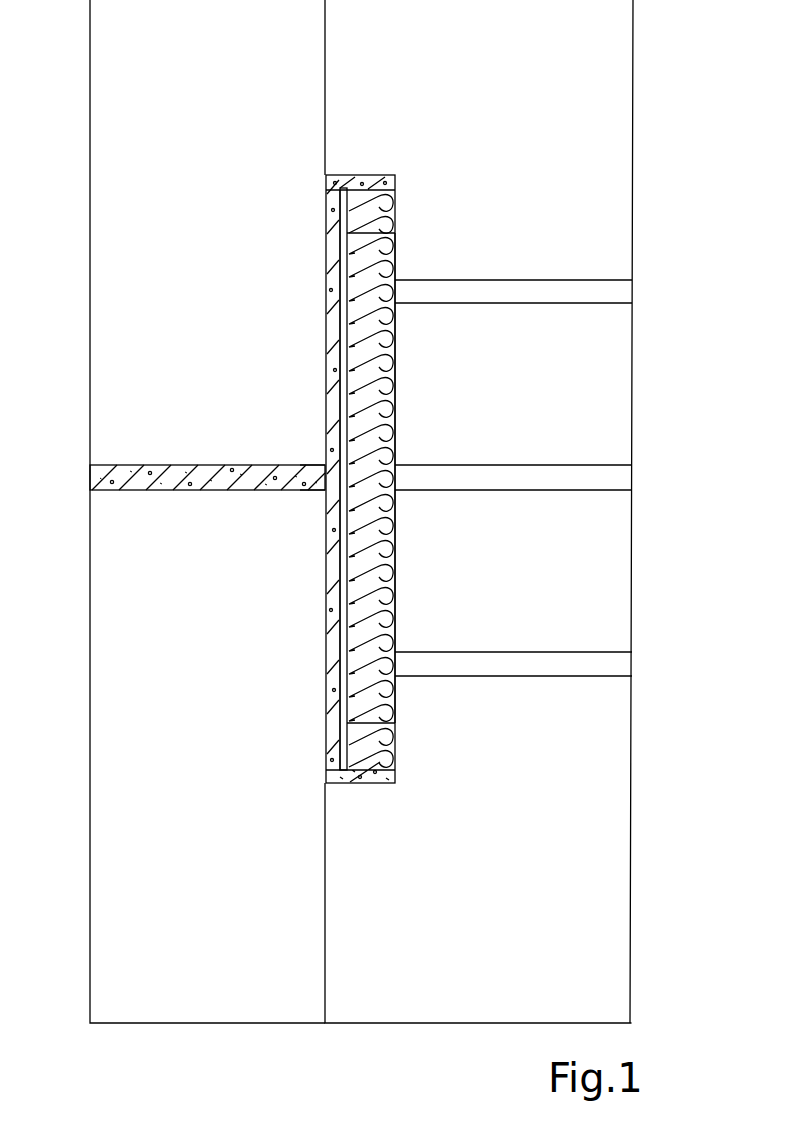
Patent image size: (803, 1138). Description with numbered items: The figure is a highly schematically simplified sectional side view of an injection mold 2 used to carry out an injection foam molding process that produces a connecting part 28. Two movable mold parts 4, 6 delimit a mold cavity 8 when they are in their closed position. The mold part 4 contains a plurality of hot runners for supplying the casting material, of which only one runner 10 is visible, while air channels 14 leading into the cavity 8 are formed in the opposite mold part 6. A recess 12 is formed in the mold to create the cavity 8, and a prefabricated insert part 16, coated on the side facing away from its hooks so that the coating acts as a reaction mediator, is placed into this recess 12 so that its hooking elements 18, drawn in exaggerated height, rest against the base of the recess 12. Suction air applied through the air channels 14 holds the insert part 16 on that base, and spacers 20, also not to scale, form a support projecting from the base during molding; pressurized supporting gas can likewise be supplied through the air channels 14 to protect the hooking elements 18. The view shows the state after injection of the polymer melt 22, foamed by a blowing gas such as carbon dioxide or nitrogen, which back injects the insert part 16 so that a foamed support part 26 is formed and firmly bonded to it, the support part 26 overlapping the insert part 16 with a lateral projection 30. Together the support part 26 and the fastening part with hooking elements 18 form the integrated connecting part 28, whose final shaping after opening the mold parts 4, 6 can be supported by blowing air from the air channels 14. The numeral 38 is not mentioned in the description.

The injection mold 2 is at (396, 511).
The mold part 4 is at (130, 75).
The mold part 6 is at (607, 62).
The mold cavity 8 is at (364, 462).
The runner 10 is at (150, 490).
The recess 12 is at (364, 462).
The air channels 14 is at (620, 293).
The insert part 16 is at (330, 232).
The hooking elements 18 is at (397, 340).
The spacers 20 is at (372, 228).
The polymer melt 22 is at (303, 472).
The support part 26 is at (332, 290).
The connecting part 28 is at (406, 684).
The lateral projection 30 is at (380, 175).
The support edge 38 is at (325, 490).